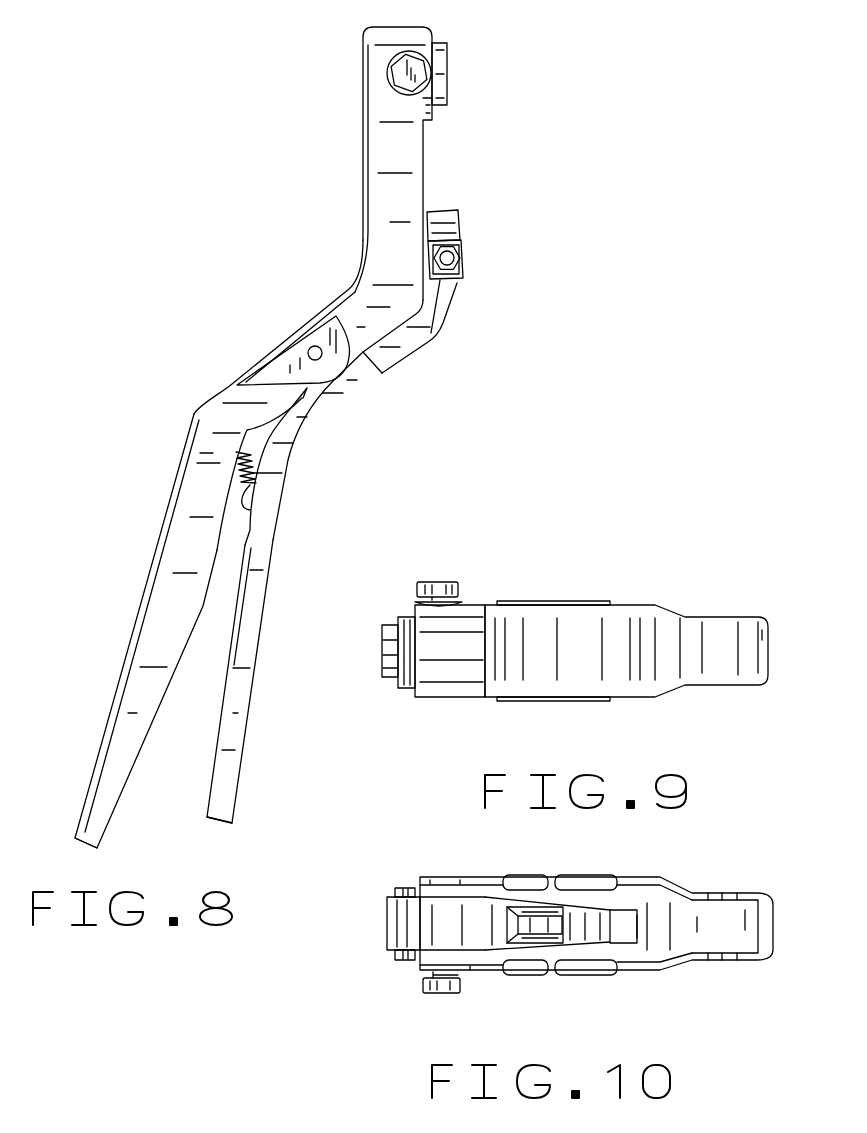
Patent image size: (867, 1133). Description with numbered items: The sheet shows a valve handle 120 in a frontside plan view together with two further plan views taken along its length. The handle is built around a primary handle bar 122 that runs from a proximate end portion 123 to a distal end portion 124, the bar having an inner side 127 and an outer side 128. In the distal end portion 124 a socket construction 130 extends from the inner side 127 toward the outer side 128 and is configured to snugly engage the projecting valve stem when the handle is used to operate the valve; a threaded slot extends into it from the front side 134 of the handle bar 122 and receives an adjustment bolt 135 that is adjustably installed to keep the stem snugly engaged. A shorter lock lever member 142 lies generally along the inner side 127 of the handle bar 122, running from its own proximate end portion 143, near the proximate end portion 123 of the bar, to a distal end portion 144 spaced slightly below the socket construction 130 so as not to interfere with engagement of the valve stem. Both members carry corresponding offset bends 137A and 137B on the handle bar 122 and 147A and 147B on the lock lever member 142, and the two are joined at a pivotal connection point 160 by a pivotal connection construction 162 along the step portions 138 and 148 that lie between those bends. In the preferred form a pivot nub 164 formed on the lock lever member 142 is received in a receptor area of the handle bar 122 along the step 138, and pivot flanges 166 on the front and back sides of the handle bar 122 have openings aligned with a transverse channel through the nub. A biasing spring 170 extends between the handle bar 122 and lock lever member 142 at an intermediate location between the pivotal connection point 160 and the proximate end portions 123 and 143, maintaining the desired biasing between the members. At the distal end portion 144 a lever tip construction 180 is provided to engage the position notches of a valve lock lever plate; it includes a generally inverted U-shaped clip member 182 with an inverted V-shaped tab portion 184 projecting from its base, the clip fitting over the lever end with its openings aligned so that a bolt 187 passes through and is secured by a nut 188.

In FIG. 8, the valve handle 120 is at (455, 30).
In FIG. 9, the valve handle 120 is at (624, 578).
In FIG. 10, the valve handle 120 is at (702, 874).
In FIG. 8, the primary handle bar 122 is at (173, 578).
In FIG. 9, the primary handle bar 122 is at (703, 618).
In FIG. 10, the primary handle bar 122 is at (727, 893).
In FIG. 8, the proximate end portion 123 is at (105, 722).
In FIG. 9, the proximate end portion 123 is at (752, 677).
In FIG. 8, the distal end portion 124 is at (372, 128).
In FIG. 9, the distal end portion 124 is at (440, 680).
In FIG. 8, the inner side 127 is at (425, 135).
In FIG. 8, the outer side 128 is at (363, 178).
In FIG. 8, the socket construction 130 is at (452, 60).
In FIG. 9, the socket construction 130 is at (390, 614).
In FIG. 8, the front side 134 is at (372, 42).
In FIG. 8, the adjustment bolt 135 is at (398, 70).
In FIG. 9, the adjustment bolt 135 is at (433, 582).
In FIG. 10, the adjustment bolt 135 is at (437, 993).
In FIG. 8, the offset bend 137A is at (218, 420).
In FIG. 8, the offset bend 137B is at (388, 277).
In FIG. 8, the step portion 138 is at (353, 302).
In FIG. 9, the step portion 138 is at (632, 685).
In FIG. 10, the step portion 138 is at (620, 900).
In FIG. 8, the lock lever member 142 is at (265, 607).
In FIG. 10, the lock lever member 142 is at (600, 947).
In FIG. 8, the proximate end portion 143 is at (240, 760).
In FIG. 10, the proximate end portion 143 is at (637, 927).
In FIG. 8, the distal end portion 144 is at (450, 298).
In FIG. 10, the distal end portion 144 is at (400, 930).
In FIG. 8, the offset bend 147A is at (282, 453).
In FIG. 8, the offset bend 147B is at (403, 347).
In FIG. 8, the step portion 148 is at (350, 388).
In FIG. 10, the step portion 148 is at (480, 923).
In FIG. 8, the pivotal connection point 160 is at (312, 350).
In FIG. 8, the pivotal connection construction 162 is at (270, 365).
In FIG. 10, the pivot nub 164 is at (537, 938).
In FIG. 9, the pivot flanges 166 is at (533, 602).
In FIG. 10, the pivot flanges 166 is at (560, 925).
In FIG. 8, the biasing spring 170 is at (250, 510).
In FIG. 8, the lever tip construction 180 is at (472, 242).
In FIG. 8, the clip member 182 is at (460, 221).
In FIG. 8, the tab portion 184 is at (440, 212).
In FIG. 8, the bolt 187 is at (460, 268).
In FIG. 10, the bolt 187 is at (398, 960).
In FIG. 10, the nut 188 is at (403, 888).